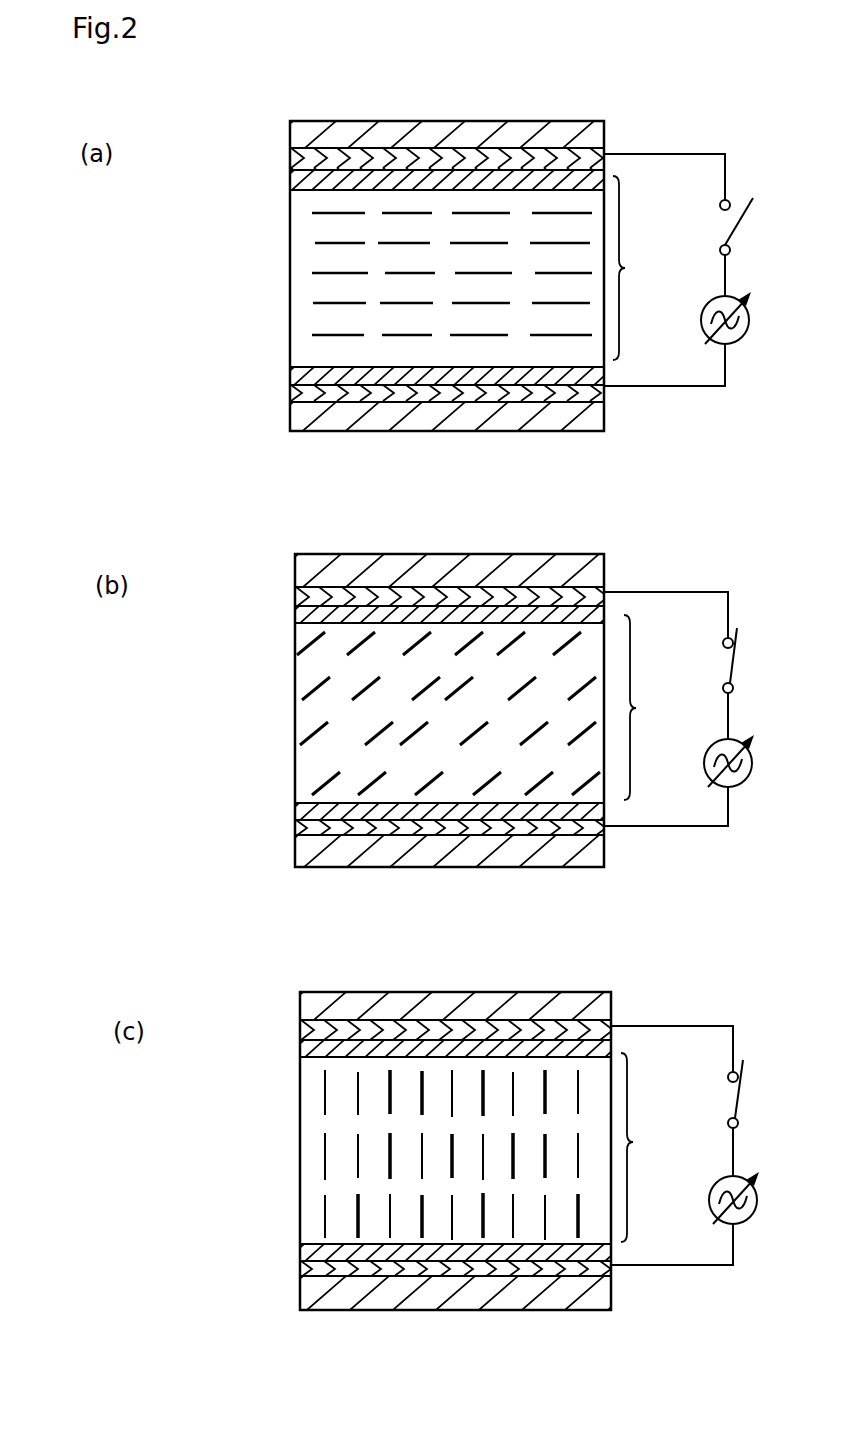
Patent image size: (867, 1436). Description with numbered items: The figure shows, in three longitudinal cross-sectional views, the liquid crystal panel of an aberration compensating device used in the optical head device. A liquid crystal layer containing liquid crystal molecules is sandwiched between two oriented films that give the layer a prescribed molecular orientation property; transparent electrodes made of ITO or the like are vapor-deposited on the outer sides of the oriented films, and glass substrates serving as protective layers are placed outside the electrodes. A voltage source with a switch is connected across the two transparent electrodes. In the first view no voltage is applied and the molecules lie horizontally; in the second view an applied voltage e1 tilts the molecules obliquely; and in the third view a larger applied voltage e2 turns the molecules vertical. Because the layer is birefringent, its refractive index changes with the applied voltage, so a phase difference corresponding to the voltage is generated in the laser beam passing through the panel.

The applied voltage e1 is at (697, 709).
The applied voltage e2 is at (706, 1145).